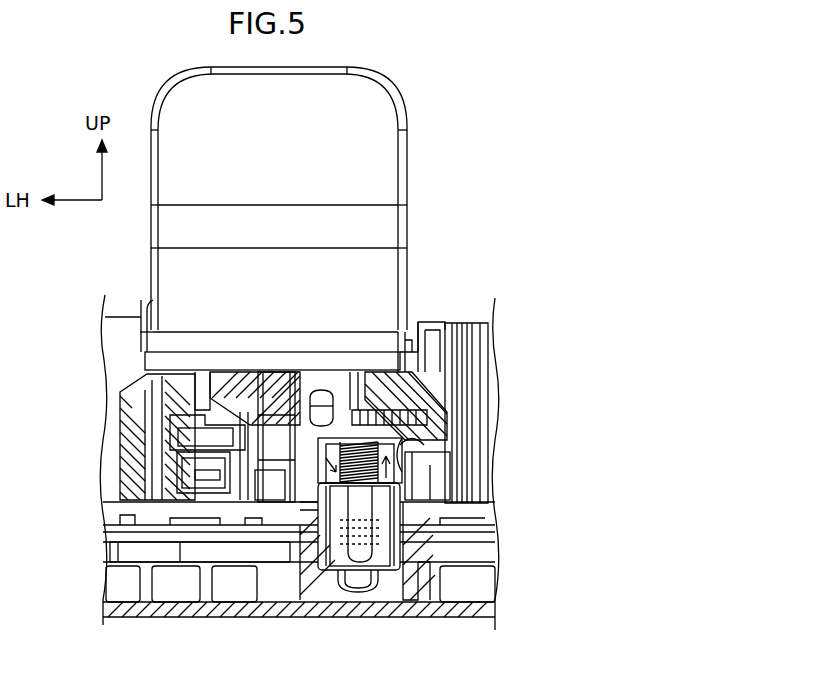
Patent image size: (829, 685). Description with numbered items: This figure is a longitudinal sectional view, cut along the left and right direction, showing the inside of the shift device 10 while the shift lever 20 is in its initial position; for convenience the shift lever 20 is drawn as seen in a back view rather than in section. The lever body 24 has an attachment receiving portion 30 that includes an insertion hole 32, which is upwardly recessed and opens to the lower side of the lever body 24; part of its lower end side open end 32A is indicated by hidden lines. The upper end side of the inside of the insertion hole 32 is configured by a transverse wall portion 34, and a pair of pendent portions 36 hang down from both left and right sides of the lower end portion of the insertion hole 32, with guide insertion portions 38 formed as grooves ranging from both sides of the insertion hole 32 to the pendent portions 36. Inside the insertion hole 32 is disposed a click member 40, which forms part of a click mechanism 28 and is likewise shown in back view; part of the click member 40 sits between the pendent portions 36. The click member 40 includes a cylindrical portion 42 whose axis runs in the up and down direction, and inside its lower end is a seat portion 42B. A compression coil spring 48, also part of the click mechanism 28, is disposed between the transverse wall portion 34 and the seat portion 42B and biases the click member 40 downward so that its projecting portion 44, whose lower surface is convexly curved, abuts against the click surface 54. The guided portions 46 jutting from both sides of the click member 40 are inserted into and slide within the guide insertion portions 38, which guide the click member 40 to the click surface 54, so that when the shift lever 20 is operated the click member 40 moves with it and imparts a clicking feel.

The shift device 10 is at (538, 263).
The shift lever 20 is at (415, 168).
The lever body 24 is at (386, 395).
The click mechanism 28 is at (306, 440).
The attachment receiving portion 30 is at (442, 492).
The insertion hole 32 is at (420, 540).
The lower end side open end 32A is at (300, 540).
The transverse wall portion 34 is at (406, 465).
The pendent portions 36 is at (278, 568).
The guide insertion portions 38 is at (316, 480).
The click member 40 is at (317, 478).
The cylindrical portion 42 is at (330, 590).
The seat portion 42B is at (396, 592).
The projecting portion 44 is at (356, 592).
The guided portions 46 is at (316, 502).
The spring 48 is at (336, 445).
The click surface 54 is at (350, 592).